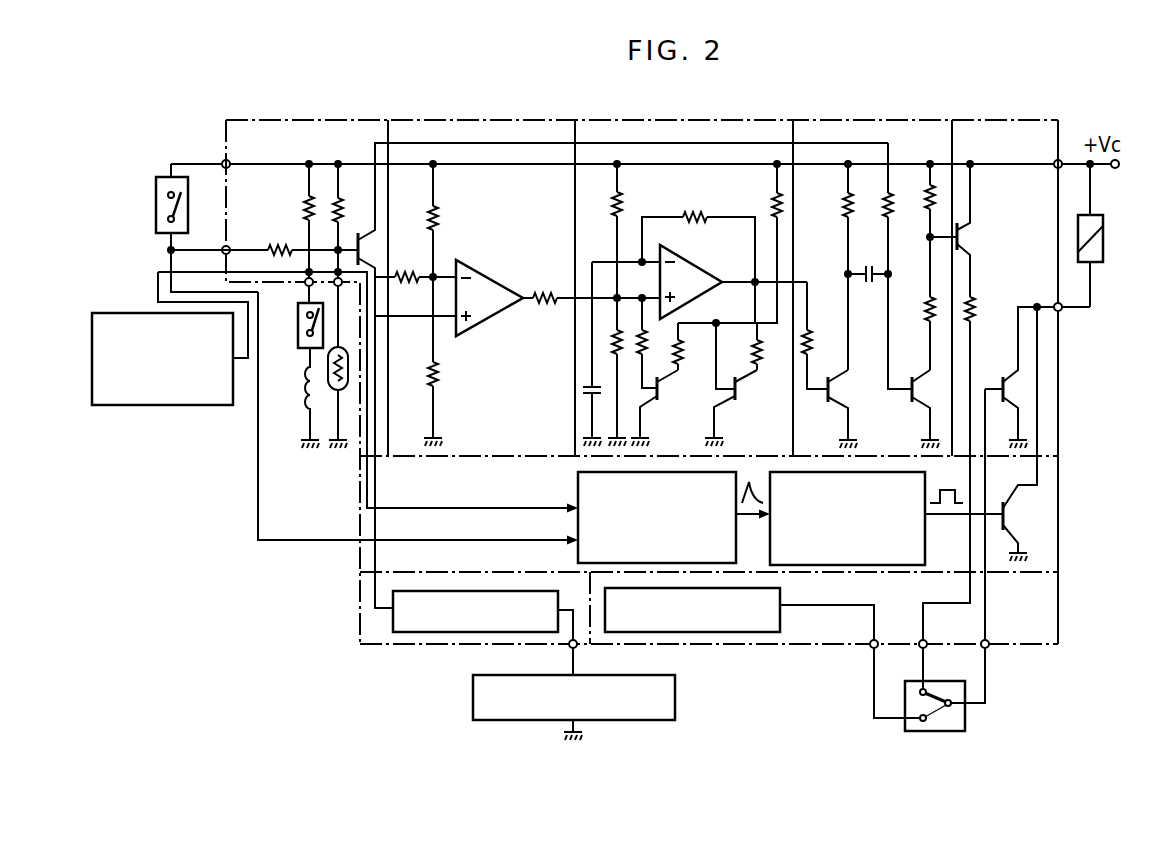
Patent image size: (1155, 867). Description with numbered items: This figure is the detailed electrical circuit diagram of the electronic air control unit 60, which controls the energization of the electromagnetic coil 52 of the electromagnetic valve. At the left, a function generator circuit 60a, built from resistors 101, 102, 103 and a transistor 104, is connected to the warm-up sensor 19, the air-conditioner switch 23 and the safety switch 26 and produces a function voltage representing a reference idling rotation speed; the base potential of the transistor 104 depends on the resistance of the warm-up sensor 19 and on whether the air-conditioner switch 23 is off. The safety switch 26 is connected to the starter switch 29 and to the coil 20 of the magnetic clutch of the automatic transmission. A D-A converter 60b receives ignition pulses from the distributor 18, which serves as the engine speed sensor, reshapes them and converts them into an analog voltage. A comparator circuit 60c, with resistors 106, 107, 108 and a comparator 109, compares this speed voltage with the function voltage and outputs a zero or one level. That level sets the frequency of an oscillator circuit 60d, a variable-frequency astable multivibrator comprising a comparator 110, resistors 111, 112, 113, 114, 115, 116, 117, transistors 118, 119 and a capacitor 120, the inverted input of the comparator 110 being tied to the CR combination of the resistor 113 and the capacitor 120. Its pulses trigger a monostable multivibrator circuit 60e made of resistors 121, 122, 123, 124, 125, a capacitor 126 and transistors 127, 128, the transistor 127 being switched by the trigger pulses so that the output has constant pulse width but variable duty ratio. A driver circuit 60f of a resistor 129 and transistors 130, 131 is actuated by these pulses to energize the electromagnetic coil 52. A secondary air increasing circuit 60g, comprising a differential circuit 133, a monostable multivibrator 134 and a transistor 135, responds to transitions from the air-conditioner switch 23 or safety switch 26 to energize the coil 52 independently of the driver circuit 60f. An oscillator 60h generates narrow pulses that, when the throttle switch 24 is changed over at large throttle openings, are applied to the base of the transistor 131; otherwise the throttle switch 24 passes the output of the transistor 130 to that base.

The distributor 18 is at (677, 701).
The warm-up sensor 19 is at (333, 395).
The coil of the magnetic clutch 20 is at (306, 388).
The air-conditioner switch 23 is at (156, 207).
The throttle switch 24 is at (966, 712).
The safety switch 26 is at (298, 336).
The starter switch 29 is at (222, 405).
The electromagnetic coil 52 is at (1103, 256).
The electronic air control unit 60 is at (400, 118).
The function generator circuit 60a is at (338, 120).
The D-A converter 60b is at (440, 632).
The comparator circuit 60c is at (483, 120).
The oscillator circuit 60d is at (767, 120).
The monostable multivibrator circuit 60e is at (932, 120).
The driver circuit 60f is at (996, 120).
The secondary air increasing circuit 60g is at (1058, 465).
The oscillator 60h is at (780, 625).
The resistor 101 is at (279, 244).
The resistor 102 is at (342, 208).
The resistor 103 is at (308, 204).
The transistor 104 is at (366, 242).
The resistor 106 is at (437, 218).
The resistor 107 is at (437, 384).
The resistor 108 is at (550, 292).
The comparator 109 is at (499, 282).
The comparator 110 is at (692, 270).
The resistor 111 is at (623, 203).
The resistor 112 is at (613, 341).
The resistor 113 is at (701, 212).
The resistor 114 is at (665, 343).
The resistor 115 is at (683, 356).
The resistor 116 is at (762, 357).
The resistor 117 is at (775, 201).
The transistor 118 is at (658, 398).
The transistor 119 is at (737, 398).
The capacitor 120 is at (586, 391).
The resistor 121 is at (810, 334).
The resistor 122 is at (847, 200).
The resistor 123 is at (889, 206).
The resistor 124 is at (930, 206).
The resistor 125 is at (930, 322).
The capacitor 126 is at (869, 283).
The transistor 127 is at (830, 402).
The transistor 128 is at (914, 402).
The resistor 129 is at (973, 312).
The transistor 130 is at (966, 238).
The transistor 131 is at (1005, 378).
The differential circuit 133 is at (578, 557).
The monostable multivibrator 134 is at (925, 536).
The transistor 135 is at (1008, 524).